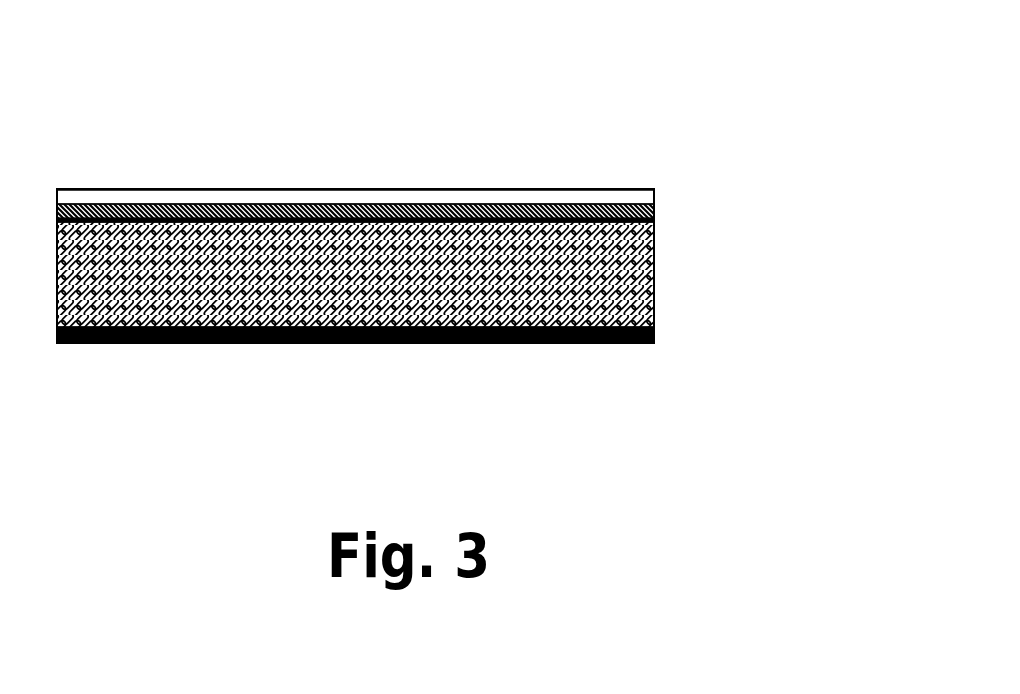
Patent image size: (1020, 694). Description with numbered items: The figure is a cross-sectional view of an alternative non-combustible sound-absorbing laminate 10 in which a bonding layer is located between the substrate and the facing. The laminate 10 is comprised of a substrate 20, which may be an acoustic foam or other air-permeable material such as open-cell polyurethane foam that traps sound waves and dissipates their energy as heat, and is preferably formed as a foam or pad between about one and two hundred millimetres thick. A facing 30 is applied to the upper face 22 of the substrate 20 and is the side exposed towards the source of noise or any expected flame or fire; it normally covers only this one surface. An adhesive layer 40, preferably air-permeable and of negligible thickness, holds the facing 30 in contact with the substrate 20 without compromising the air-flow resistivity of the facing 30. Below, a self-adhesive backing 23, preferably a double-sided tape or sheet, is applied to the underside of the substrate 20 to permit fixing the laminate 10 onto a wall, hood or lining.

The laminate 10 is at (512, 131).
The facing 30 is at (540, 193).
The adhesive layer 40 is at (620, 203).
The upper face 22 is at (608, 225).
The substrate 20 is at (610, 282).
The self-adhesive backing 23 is at (578, 343).